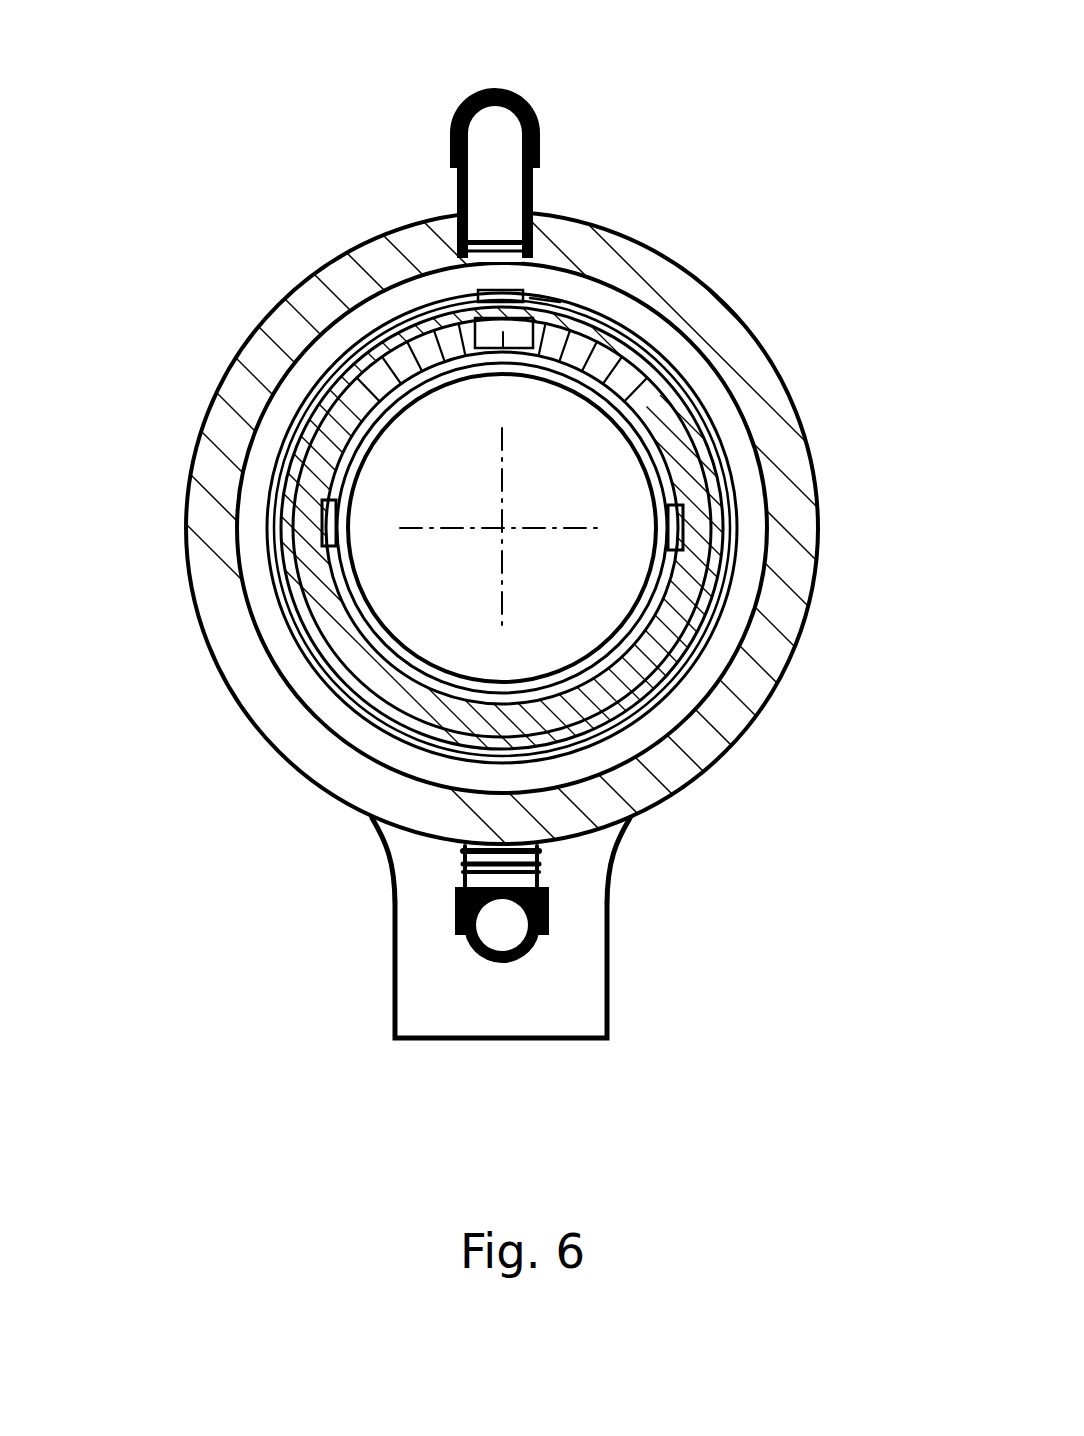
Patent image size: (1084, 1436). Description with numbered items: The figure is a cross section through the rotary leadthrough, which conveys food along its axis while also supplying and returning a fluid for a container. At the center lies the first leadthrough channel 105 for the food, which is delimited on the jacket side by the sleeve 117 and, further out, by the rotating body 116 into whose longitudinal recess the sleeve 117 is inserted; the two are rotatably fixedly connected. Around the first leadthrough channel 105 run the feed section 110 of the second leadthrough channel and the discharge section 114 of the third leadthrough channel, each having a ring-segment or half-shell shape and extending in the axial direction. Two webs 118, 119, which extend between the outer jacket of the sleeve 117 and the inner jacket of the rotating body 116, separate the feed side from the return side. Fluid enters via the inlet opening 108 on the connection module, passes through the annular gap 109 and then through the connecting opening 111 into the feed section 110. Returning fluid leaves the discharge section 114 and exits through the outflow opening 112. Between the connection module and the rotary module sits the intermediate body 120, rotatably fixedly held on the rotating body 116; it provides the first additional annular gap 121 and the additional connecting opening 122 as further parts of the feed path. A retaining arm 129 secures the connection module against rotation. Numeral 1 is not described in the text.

The sensor device 1 is at (256, 306).
The first leadthrough channel 105 is at (590, 612).
The inlet opening 108 is at (490, 155).
The annular gap 109 is at (583, 290).
The feed section 110 is at (622, 335).
The connecting opening 111 is at (530, 363).
The outflow opening 112 is at (502, 929).
The discharge section 114 is at (631, 692).
The rotating body 116 is at (660, 415).
The sleeve 117 is at (427, 660).
The web 118 is at (667, 527).
The web 119 is at (322, 516).
The intermediate body 120 is at (370, 328).
The first additional annular gap 121 is at (322, 627).
The additional connecting opening 122 is at (469, 189).
The retaining arm 129 is at (424, 1016).